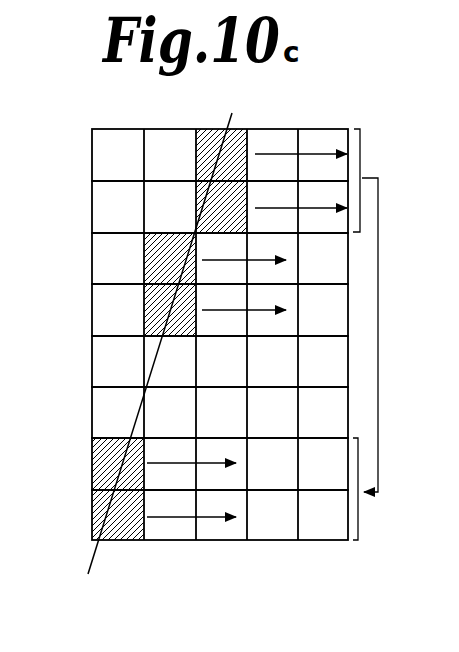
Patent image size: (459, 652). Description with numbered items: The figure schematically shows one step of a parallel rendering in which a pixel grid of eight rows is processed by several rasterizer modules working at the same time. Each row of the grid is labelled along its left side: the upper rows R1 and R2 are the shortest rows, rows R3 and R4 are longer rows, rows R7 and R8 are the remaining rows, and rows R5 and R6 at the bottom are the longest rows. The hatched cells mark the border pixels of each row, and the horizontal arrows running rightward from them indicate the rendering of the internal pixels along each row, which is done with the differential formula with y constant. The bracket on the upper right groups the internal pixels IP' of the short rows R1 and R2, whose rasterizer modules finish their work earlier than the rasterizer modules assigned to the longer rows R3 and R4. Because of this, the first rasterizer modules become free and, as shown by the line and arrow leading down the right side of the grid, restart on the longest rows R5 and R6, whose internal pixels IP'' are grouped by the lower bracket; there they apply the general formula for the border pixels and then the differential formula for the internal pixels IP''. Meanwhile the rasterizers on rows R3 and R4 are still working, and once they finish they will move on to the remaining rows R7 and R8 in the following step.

The row R1 is at (91, 157).
The row R2 is at (91, 211).
The row R3 is at (91, 261).
The row R4 is at (91, 312).
The row R5 is at (91, 466).
The row R6 is at (91, 518).
The row R7 is at (91, 362).
The row R8 is at (91, 412).
The internal pixels IP' is at (377, 130).
The internal pixels IP'' is at (296, 391).